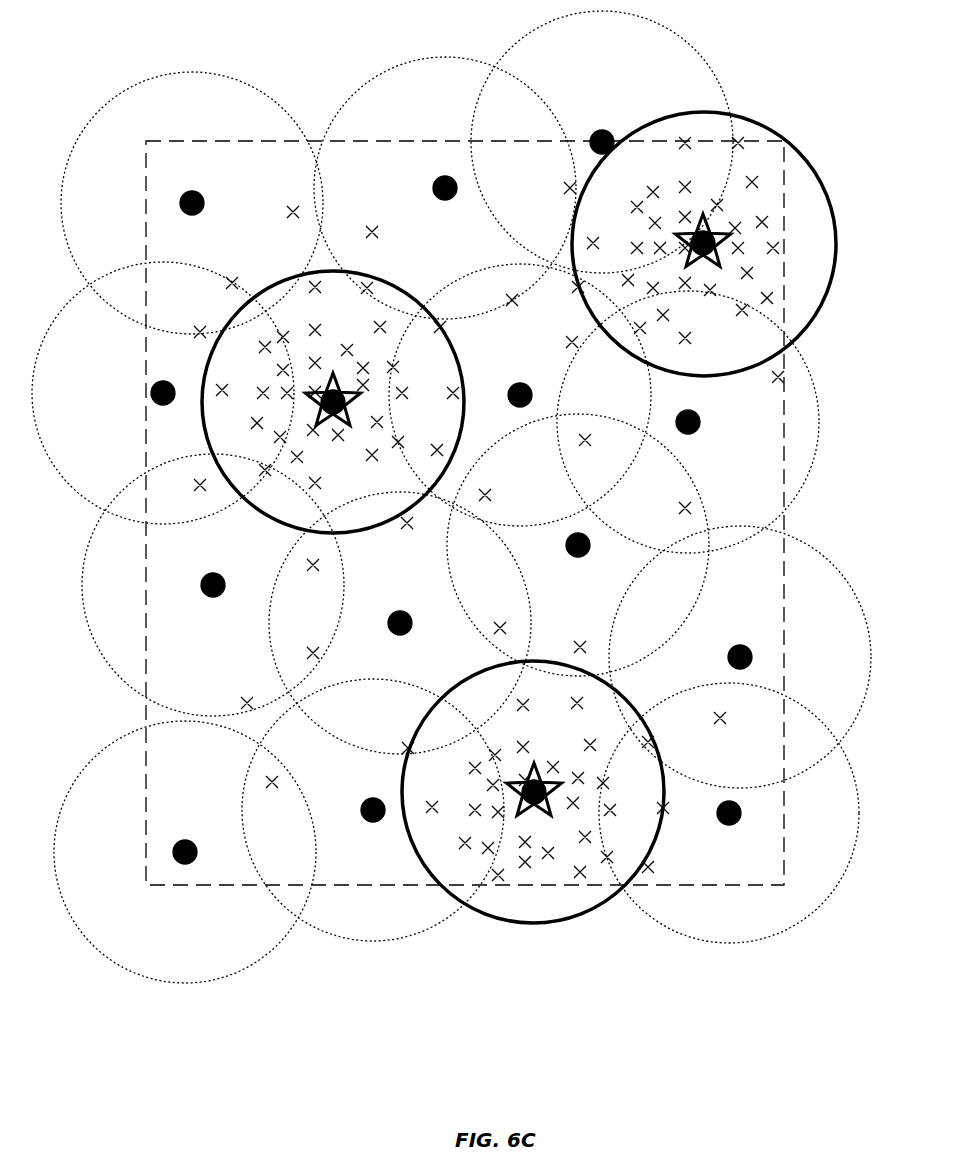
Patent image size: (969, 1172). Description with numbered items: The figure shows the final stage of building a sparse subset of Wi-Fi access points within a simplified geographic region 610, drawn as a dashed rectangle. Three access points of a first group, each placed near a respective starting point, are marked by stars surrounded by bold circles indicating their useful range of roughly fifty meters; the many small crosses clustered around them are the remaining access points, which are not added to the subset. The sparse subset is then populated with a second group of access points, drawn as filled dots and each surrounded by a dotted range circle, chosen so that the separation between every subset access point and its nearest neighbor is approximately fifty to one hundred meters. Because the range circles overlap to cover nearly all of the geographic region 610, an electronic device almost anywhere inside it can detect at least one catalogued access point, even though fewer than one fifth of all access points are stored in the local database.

The geographic region 610 is at (785, 520).